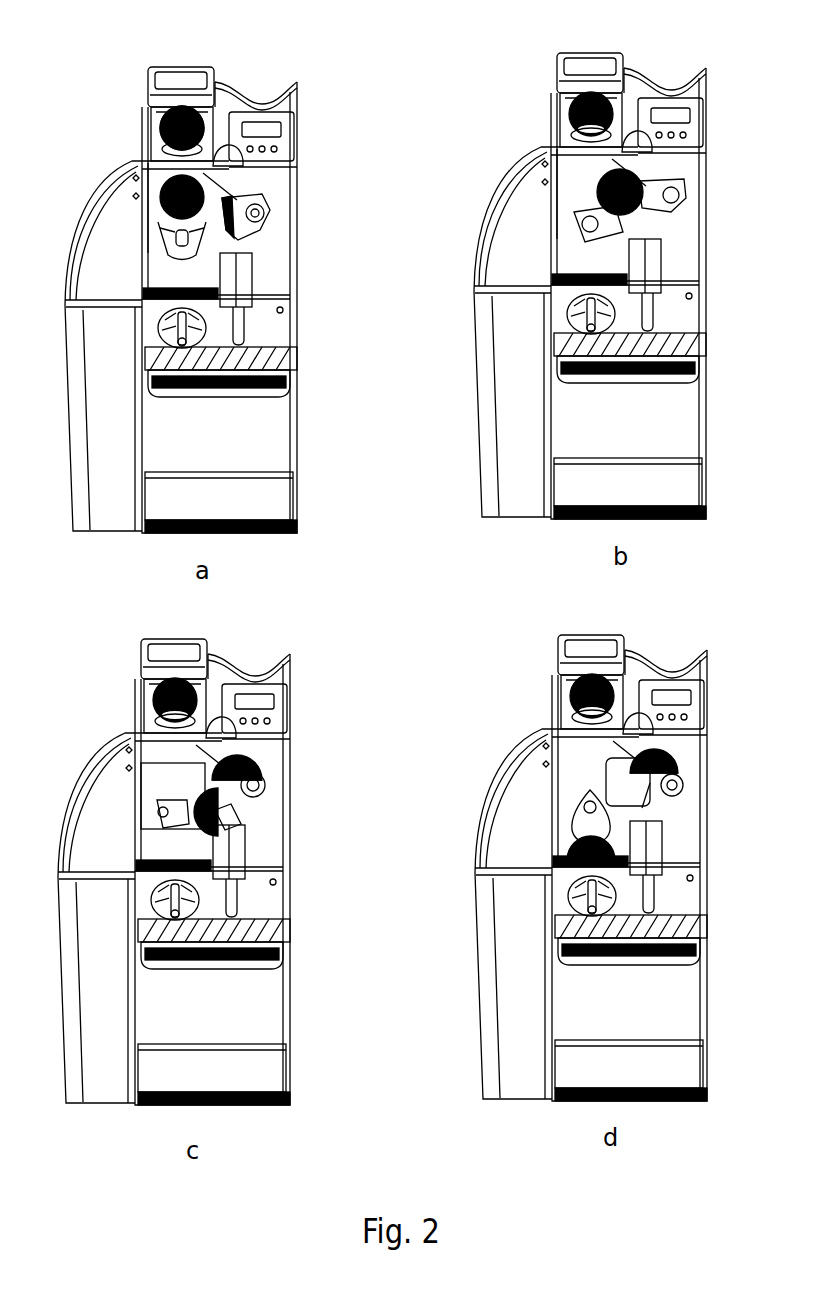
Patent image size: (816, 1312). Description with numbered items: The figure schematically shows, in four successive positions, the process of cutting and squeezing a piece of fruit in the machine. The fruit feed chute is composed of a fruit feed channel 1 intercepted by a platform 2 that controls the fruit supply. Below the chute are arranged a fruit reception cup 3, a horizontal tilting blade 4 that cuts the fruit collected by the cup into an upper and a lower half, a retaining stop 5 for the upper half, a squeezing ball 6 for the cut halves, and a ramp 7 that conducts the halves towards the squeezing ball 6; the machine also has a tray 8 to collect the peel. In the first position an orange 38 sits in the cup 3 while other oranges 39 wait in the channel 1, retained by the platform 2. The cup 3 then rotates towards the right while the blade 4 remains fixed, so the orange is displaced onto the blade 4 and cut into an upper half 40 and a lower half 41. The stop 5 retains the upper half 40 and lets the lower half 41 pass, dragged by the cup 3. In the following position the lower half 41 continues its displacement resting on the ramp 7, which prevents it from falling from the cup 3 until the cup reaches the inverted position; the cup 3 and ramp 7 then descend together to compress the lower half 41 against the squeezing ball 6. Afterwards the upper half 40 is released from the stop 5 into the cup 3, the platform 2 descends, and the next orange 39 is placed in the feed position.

The fruit feed channel 1 is at (165, 80).
The platform 2 is at (157, 140).
The fruit reception cup 3 is at (163, 232).
The horizontal tilting blade 4 is at (247, 227).
The retaining stop 5 is at (233, 177).
The squeezing ball 6 is at (157, 332).
The ramp 7 is at (143, 289).
The tray 8 is at (110, 417).
The orange 38 is at (150, 193).
The oranges 39 is at (200, 110).
The upper half 40 is at (151, 748).
The lower half 41 is at (132, 802).